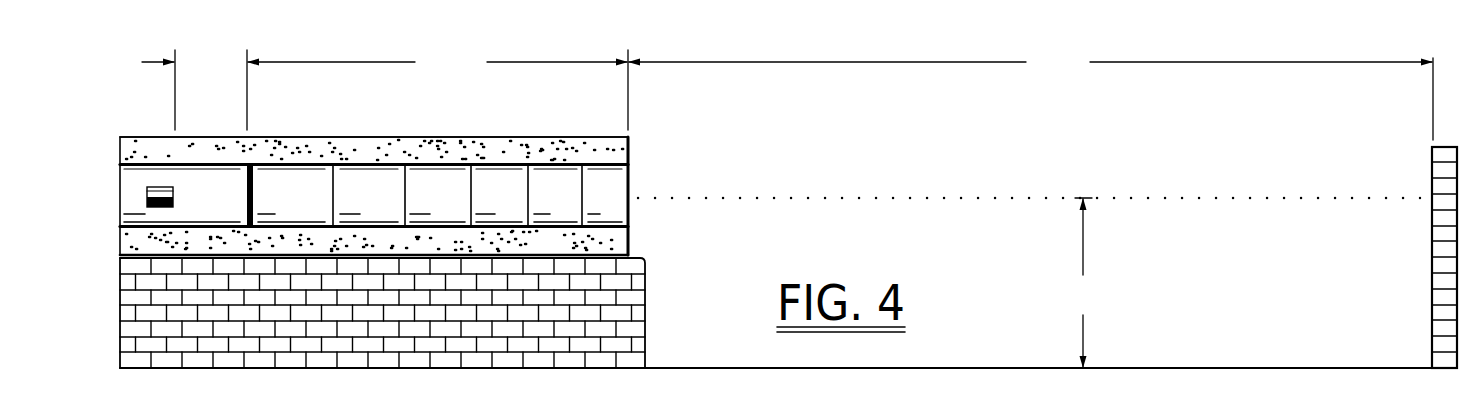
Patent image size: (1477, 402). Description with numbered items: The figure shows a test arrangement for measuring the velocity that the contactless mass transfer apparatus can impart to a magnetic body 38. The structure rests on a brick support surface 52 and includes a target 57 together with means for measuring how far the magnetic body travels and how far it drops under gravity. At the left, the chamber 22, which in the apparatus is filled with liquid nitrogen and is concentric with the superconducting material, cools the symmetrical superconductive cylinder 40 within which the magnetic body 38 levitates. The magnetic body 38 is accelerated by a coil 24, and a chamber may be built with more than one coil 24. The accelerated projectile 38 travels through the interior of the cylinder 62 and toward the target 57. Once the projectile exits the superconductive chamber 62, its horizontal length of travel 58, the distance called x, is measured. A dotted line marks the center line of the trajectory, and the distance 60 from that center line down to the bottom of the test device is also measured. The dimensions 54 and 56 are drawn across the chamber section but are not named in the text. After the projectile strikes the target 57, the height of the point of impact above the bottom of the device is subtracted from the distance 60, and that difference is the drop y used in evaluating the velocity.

The chamber 22 is at (277, 147).
The coil 24 is at (254, 213).
The magnetic body 38 is at (162, 189).
The symmetrical superconductive cylinder 40 is at (625, 180).
The brick support surface 52 is at (638, 283).
The panel length 54 is at (438, 89).
The end section width 56 is at (194, 89).
The target 57 is at (1432, 244).
The length of travel 58 is at (1031, 94).
The distance from trajectory center line to bottom of test device 60 is at (1081, 282).
The cylinder 62 is at (357, 178).